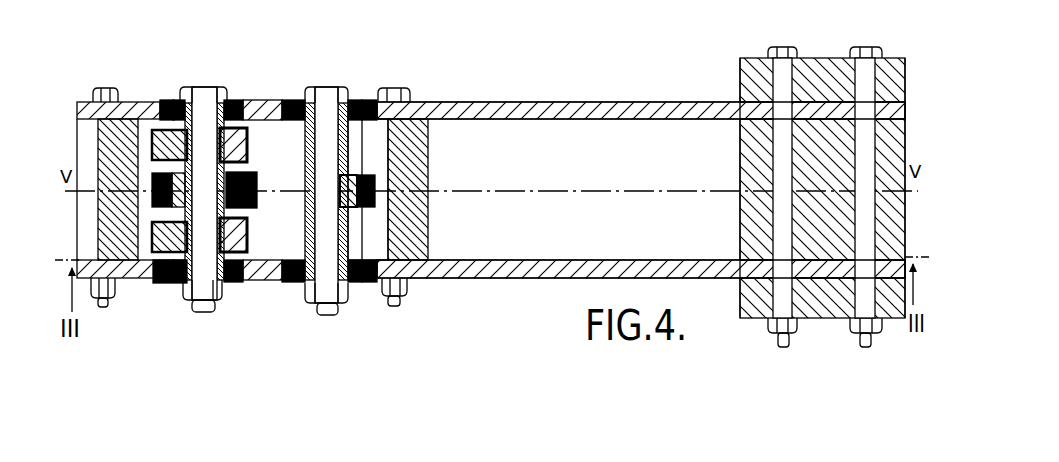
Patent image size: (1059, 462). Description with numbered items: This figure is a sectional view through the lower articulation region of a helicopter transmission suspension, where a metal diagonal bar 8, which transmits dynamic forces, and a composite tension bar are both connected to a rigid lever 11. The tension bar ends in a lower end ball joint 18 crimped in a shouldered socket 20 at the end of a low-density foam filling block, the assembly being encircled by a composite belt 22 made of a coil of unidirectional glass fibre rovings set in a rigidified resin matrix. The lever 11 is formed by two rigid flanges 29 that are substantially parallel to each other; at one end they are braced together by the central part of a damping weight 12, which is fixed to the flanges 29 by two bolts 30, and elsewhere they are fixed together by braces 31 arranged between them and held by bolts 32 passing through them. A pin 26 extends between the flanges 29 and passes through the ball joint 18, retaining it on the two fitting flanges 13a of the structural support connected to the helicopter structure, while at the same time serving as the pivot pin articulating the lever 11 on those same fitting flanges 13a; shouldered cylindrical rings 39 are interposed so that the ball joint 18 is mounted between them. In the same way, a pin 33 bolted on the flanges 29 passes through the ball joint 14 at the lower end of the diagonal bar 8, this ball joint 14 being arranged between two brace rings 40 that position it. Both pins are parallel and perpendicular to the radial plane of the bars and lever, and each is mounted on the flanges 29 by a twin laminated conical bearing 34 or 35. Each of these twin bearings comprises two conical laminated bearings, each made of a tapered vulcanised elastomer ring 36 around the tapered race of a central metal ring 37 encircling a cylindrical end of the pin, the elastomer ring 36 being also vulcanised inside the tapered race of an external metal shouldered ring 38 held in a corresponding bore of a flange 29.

The diagonal bar 8 is at (370, 183).
The rigid lever 11 is at (543, 100).
The damping weight 12 is at (757, 155).
The fitting flanges 13a is at (247, 135).
The ball joint 14 is at (373, 208).
The lower end ball joint 18 is at (167, 284).
The shouldered socket 20 is at (120, 106).
The composite belt 22 is at (152, 212).
The pin 26 is at (201, 108).
The rigid flanges 29 is at (618, 270).
The bolts 30 is at (862, 92).
The braces 31 is at (107, 160).
The bolts 32 is at (102, 307).
The pin 33 is at (323, 253).
The twin laminated conical bearing 34 is at (252, 99).
The twin laminated conical bearing 35 is at (296, 98).
The tapered elastomer ring 36 is at (181, 100).
The central metal ring 37 is at (221, 108).
The external metal shouldered ring 38 is at (160, 100).
The shouldered cylindrical rings 39 is at (245, 170).
The brace rings 40 is at (348, 140).